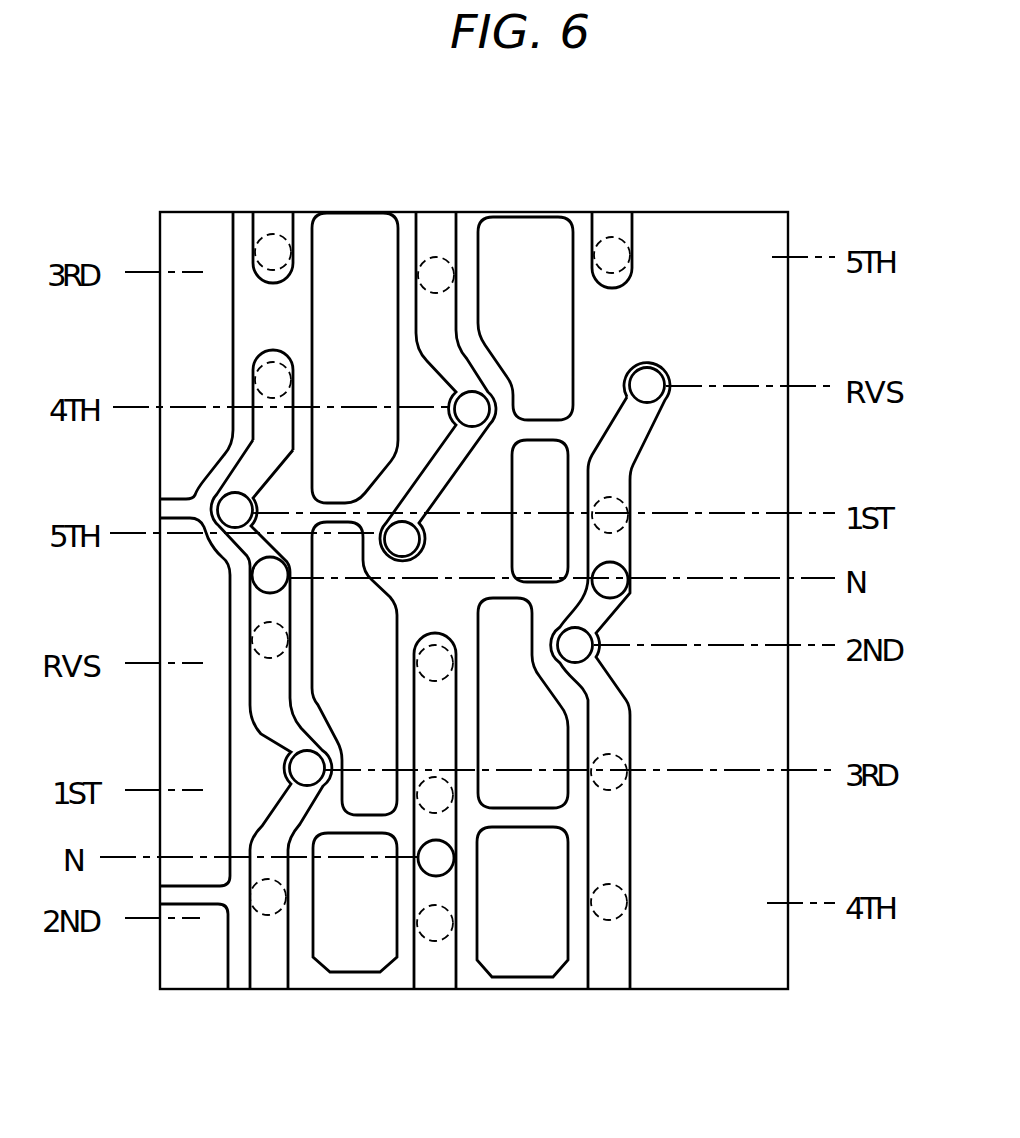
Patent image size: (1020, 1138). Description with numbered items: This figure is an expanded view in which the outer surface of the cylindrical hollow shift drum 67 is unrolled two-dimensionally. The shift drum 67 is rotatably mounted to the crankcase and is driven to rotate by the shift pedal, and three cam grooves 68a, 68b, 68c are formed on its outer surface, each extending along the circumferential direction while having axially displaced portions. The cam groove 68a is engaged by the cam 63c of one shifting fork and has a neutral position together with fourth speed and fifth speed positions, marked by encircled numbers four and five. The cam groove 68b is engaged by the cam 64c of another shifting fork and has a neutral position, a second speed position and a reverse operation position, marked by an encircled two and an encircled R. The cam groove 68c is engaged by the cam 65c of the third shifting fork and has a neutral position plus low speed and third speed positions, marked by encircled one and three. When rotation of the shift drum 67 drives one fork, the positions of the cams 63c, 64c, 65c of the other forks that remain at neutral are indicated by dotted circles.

The shift drum 67 is at (764, 228).
The cam groove 68a is at (437, 973).
The cam groove 68b is at (612, 975).
The cam groove 68c is at (268, 973).
The cam 63c is at (454, 868).
The cam 64c is at (614, 596).
The cam 65c is at (252, 575).